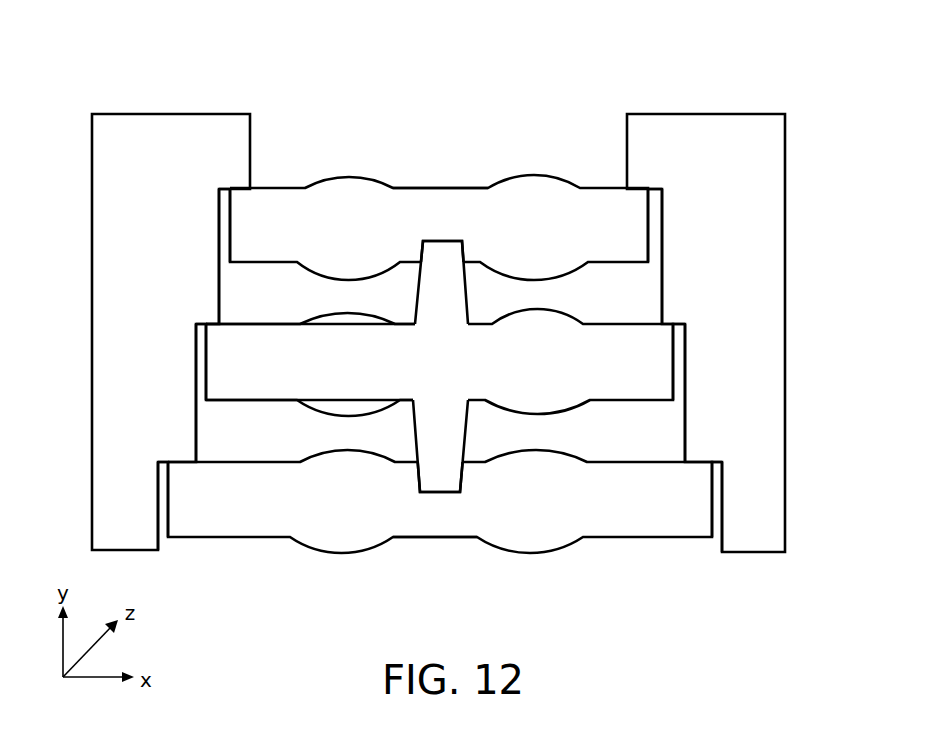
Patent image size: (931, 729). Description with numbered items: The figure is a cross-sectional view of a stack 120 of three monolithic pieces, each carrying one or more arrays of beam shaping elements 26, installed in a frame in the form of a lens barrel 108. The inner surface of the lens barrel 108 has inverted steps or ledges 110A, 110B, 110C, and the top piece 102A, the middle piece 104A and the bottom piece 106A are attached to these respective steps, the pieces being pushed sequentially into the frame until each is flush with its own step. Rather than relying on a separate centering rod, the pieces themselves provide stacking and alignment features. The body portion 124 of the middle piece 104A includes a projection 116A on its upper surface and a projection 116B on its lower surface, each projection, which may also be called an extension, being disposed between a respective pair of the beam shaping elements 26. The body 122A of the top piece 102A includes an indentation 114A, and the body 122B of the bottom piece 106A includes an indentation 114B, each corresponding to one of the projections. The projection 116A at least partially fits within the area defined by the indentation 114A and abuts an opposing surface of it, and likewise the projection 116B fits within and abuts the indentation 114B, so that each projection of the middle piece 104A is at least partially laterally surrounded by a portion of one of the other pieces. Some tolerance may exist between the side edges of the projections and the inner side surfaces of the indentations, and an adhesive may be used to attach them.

The stack 120 is at (572, 115).
The lens barrel 108 is at (92, 150).
The step 110A is at (240, 190).
The step 110B is at (207, 328).
The step 110C is at (195, 467).
The top piece 102A is at (487, 234).
The middle piece 104A is at (479, 372).
The bottom piece 106A is at (515, 509).
The indentation 114A is at (436, 270).
The indentation 114B is at (440, 476).
The projection 116A is at (434, 270).
The projection 116B is at (458, 438).
The body 122A is at (453, 193).
The body 122B is at (443, 525).
The body portion 124 is at (415, 358).
The beam shaping elements 26 is at (347, 177).